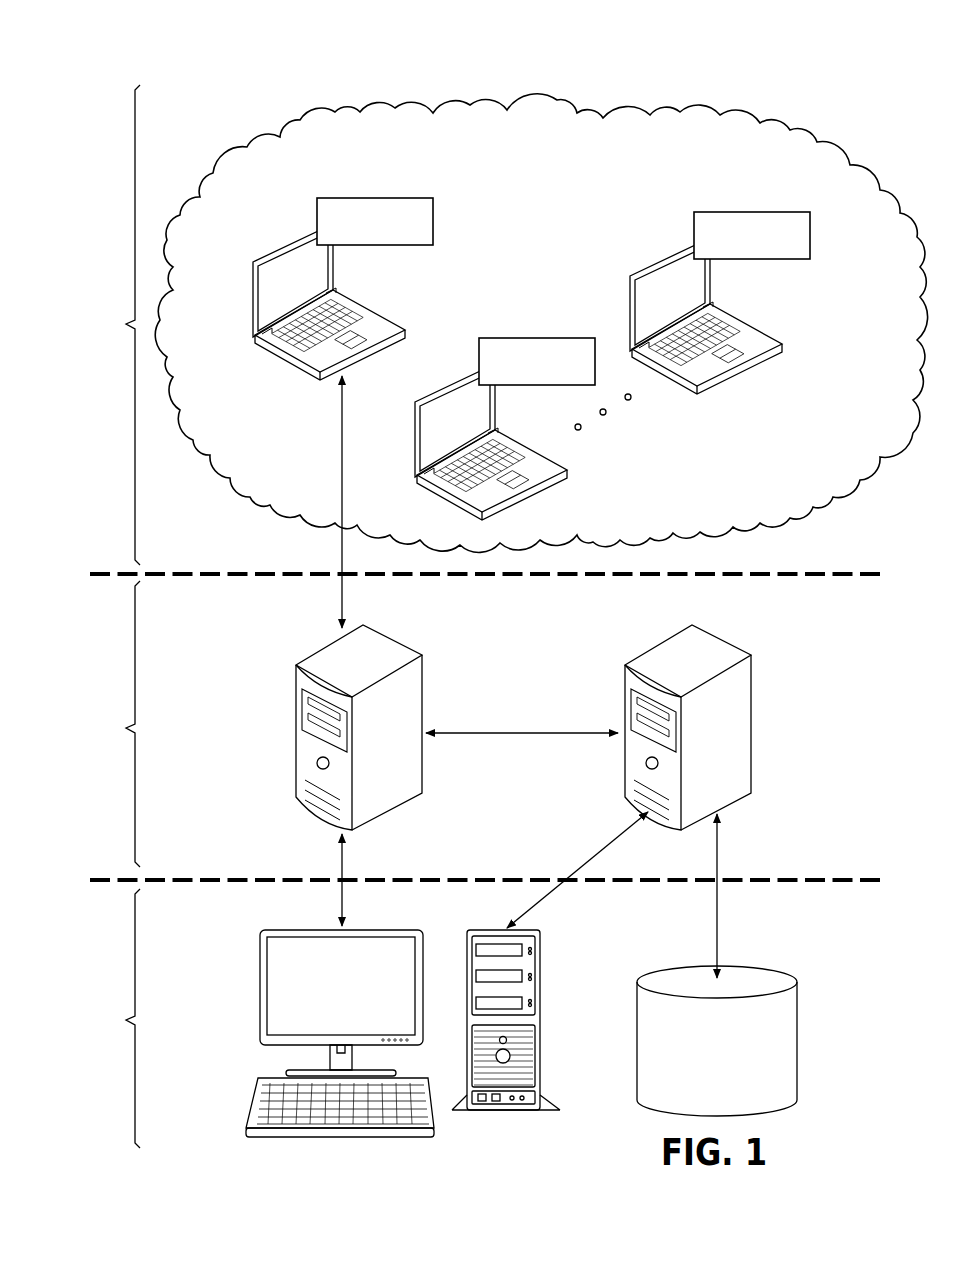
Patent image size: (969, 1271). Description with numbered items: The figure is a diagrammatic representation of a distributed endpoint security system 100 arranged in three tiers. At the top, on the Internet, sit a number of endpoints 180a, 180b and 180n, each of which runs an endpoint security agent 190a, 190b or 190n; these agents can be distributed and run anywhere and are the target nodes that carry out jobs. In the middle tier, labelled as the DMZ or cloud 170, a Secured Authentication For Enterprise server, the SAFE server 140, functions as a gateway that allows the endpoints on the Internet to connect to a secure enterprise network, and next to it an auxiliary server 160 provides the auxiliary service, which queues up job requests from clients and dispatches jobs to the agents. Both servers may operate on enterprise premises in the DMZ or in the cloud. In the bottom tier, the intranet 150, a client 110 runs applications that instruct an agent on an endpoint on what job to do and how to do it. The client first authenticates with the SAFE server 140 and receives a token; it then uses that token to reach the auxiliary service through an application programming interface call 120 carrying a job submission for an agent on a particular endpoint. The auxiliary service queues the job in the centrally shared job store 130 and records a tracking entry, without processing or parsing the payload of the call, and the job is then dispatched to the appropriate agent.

The distributed endpoint security system 100 is at (260, 61).
The client 110 is at (392, 1138).
The application programming interface (API) call 120 is at (556, 898).
The job store 130 is at (740, 1084).
The SAFE server 140 is at (424, 688).
The intranet 150 is at (105, 1024).
The auxiliary server 160 is at (753, 690).
The DMZ or cloud 170 is at (105, 732).
The endpoint 180a is at (372, 301).
The endpoint 180b is at (545, 498).
The endpoint 180n is at (747, 314).
The agent 190a is at (372, 197).
The agent 190b is at (532, 337).
The agent 190n is at (750, 211).